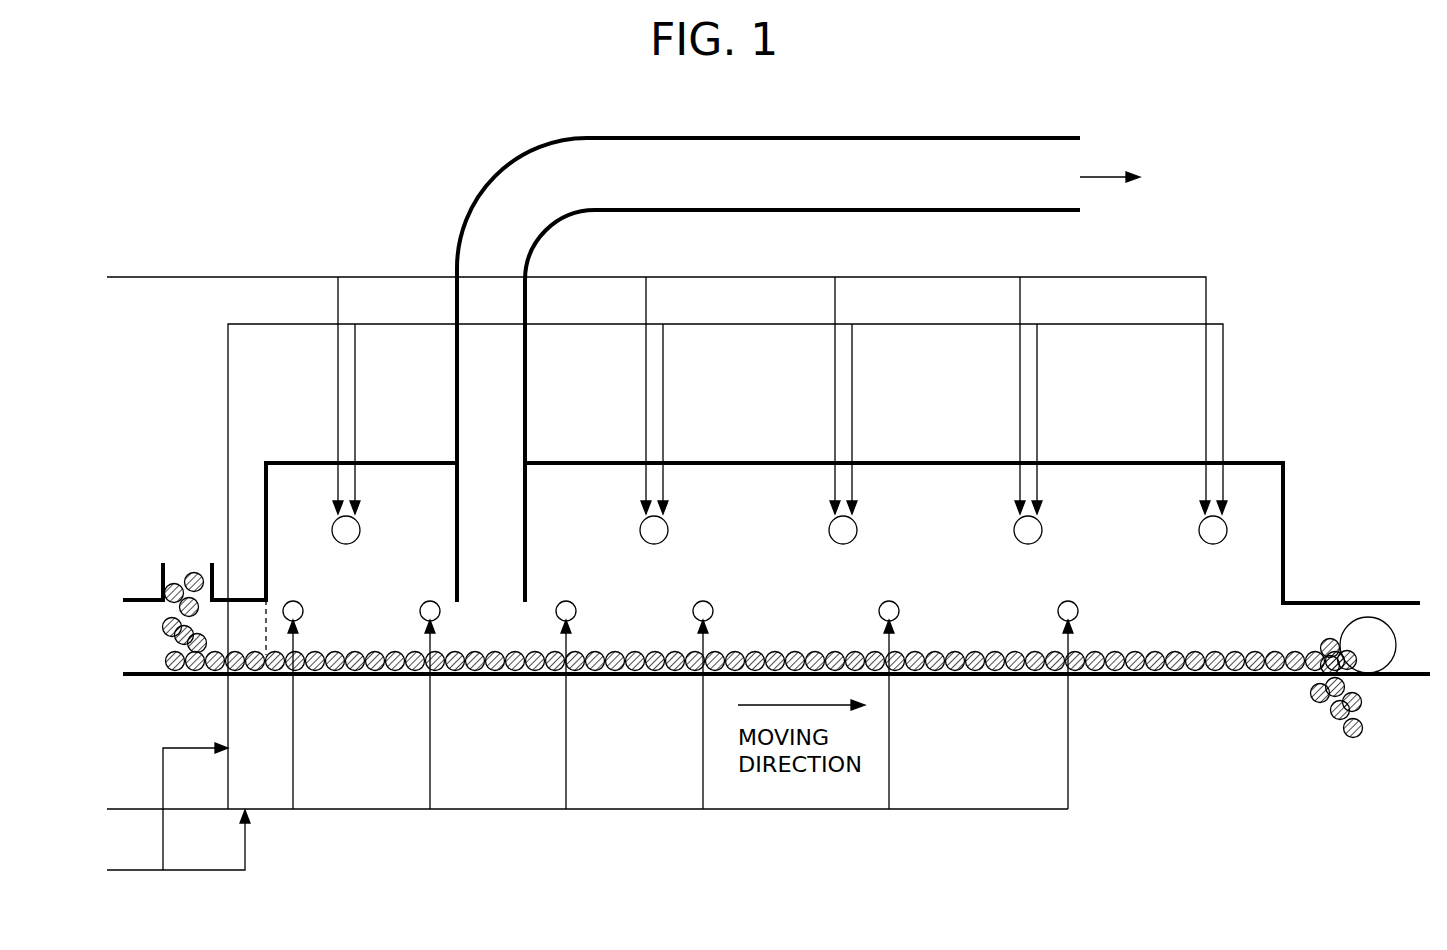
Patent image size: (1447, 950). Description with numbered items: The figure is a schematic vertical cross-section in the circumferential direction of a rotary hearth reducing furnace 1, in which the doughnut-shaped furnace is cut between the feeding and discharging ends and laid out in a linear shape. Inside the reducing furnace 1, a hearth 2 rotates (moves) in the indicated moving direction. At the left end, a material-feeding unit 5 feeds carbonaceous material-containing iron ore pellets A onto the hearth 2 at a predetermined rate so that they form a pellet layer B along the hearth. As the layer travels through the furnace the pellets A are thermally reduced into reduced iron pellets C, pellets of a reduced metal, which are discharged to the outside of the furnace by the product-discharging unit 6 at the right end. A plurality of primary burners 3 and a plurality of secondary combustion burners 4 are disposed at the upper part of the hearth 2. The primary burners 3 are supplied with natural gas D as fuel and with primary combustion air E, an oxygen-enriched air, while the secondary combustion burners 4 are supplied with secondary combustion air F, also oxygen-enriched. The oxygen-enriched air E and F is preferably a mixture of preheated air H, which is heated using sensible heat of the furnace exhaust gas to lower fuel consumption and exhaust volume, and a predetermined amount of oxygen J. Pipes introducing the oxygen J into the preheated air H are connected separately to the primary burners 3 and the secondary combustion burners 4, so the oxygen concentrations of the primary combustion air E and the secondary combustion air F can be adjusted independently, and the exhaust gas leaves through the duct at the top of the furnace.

The reducing furnace 1 is at (1301, 504).
The hearth 2 is at (1404, 692).
The primary burners 3 is at (360, 532).
The secondary combustion burners 4 is at (303, 609).
The material-feeding unit 5 is at (163, 577).
The product-discharging unit 6 is at (1363, 617).
The carbonaceous material-containing iron ore pellets A is at (190, 570).
The pellet layer B is at (609, 641).
The reduced iron pellets C is at (1335, 720).
The natural gas D is at (669, 370).
The primary combustion air E is at (228, 368).
The secondary combustion air F is at (280, 812).
The preheated air H is at (575, 810).
The oxygen J is at (166, 813).